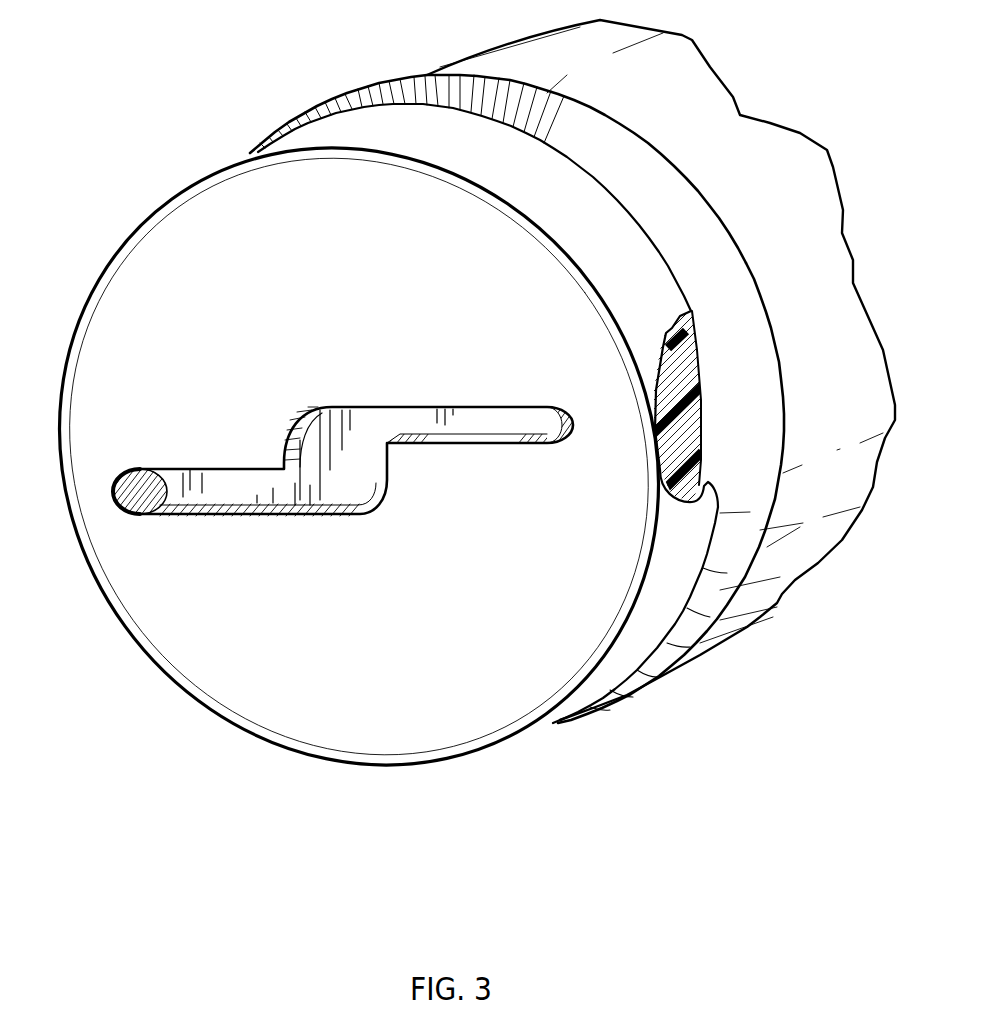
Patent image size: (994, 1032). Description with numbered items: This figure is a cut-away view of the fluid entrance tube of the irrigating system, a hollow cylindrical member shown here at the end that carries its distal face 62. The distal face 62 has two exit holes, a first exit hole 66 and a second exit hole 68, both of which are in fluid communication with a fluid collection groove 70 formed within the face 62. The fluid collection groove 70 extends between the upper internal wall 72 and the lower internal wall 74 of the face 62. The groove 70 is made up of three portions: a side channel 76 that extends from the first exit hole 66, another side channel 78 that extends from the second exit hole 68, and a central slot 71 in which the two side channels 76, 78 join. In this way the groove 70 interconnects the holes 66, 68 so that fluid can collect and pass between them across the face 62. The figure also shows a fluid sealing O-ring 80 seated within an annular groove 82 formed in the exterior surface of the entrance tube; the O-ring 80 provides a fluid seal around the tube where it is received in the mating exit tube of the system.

The distal face 62 is at (247, 232).
The first exit hole 66 is at (121, 512).
The second exit hole 68 is at (533, 440).
The fluid collection groove 70 is at (359, 458).
The central slot 71 is at (330, 433).
The upper internal wall 72 is at (380, 413).
The lower internal wall 74 is at (250, 508).
The side channel 76 is at (232, 487).
The side channel 78 is at (478, 420).
The fluid sealing O-ring 80 is at (731, 350).
The annular groove 82 is at (703, 484).